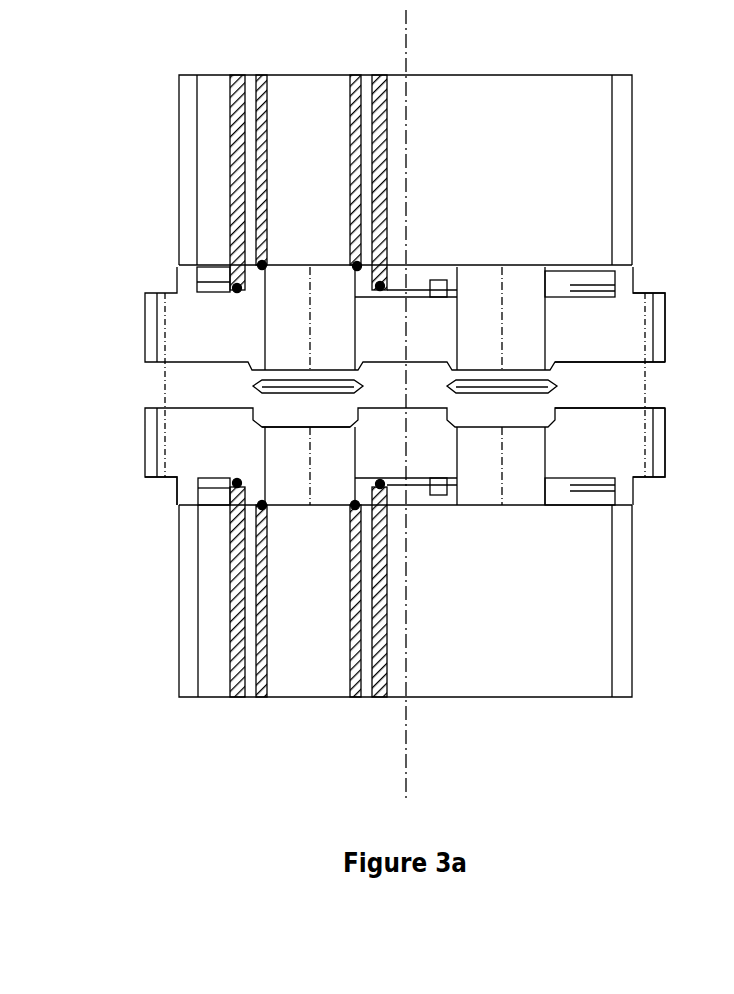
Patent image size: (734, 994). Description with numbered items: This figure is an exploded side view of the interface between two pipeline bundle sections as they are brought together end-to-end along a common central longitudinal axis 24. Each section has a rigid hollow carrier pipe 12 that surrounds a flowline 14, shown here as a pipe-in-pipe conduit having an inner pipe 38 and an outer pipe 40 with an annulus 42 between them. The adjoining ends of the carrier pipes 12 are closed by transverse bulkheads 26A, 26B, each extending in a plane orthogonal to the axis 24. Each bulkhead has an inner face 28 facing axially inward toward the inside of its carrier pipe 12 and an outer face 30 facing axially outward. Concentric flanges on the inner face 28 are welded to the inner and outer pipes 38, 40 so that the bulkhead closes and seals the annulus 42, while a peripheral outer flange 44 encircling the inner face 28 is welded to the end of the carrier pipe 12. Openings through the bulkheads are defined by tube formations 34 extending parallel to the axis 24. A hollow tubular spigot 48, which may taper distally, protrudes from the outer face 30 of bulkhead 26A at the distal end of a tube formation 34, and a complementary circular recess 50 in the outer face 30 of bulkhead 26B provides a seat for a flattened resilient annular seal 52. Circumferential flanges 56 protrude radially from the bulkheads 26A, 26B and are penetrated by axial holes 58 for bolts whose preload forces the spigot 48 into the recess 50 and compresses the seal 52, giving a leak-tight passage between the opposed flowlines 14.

The carrier pipe 12 is at (190, 192).
The flowline 14 is at (296, 361).
The central longitudinal axis 24 is at (407, 743).
The bulkhead 26A is at (192, 307).
The bulkhead 26B is at (178, 437).
The inner face 28 is at (410, 295).
The outer face 30 is at (573, 407).
The tube formation 34 is at (520, 288).
The inner pipe 38 is at (358, 160).
The outer pipe 40 is at (383, 203).
The annulus 42 is at (370, 92).
The peripheral outer flange 44 is at (187, 492).
The spigot 48 is at (252, 367).
The recess 50 is at (293, 423).
The seal 52 is at (530, 385).
The circumferential flange 56 is at (653, 462).
The axial hole 58 is at (643, 323).